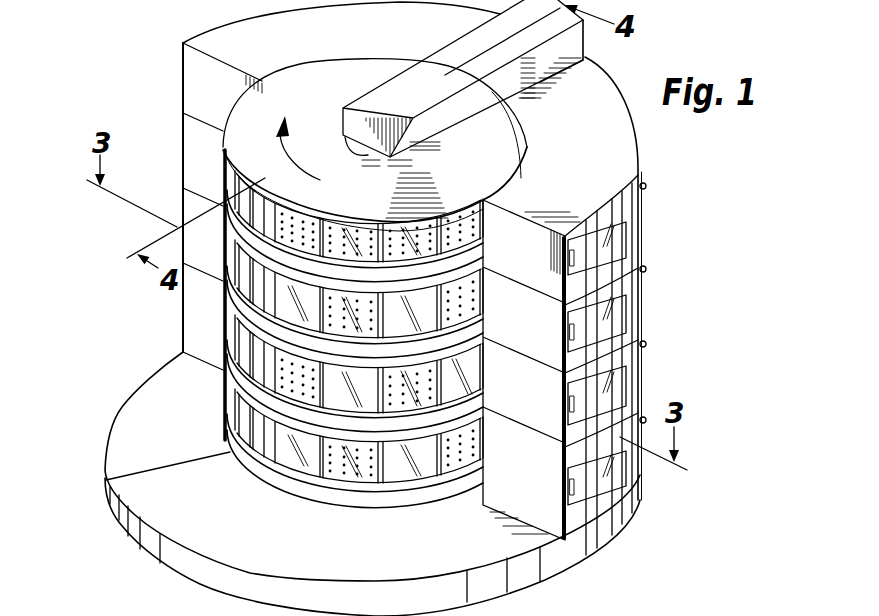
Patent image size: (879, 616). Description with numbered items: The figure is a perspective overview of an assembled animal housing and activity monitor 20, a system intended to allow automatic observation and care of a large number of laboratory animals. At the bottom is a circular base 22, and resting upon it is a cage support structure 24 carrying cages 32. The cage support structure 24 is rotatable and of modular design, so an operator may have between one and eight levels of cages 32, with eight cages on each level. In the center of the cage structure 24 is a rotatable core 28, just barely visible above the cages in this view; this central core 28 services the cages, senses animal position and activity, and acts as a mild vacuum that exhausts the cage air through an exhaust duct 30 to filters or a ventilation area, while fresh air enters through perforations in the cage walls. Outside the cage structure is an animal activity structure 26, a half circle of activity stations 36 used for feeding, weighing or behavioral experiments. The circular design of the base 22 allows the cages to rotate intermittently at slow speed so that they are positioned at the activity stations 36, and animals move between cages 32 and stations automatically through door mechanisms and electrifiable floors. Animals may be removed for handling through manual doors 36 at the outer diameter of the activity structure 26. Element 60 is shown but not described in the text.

The animal housing and activity monitor 20 is at (178, 135).
The base 22 is at (147, 547).
The cage support structure 24 is at (106, 481).
The animal activity structure 26 is at (183, 333).
The rotatable core 28 is at (357, 150).
The exhaust duct 30 is at (572, 37).
The cages 32 is at (414, 234).
The activity stations 36 is at (640, 214).
The arm end member 60 is at (583, 55).